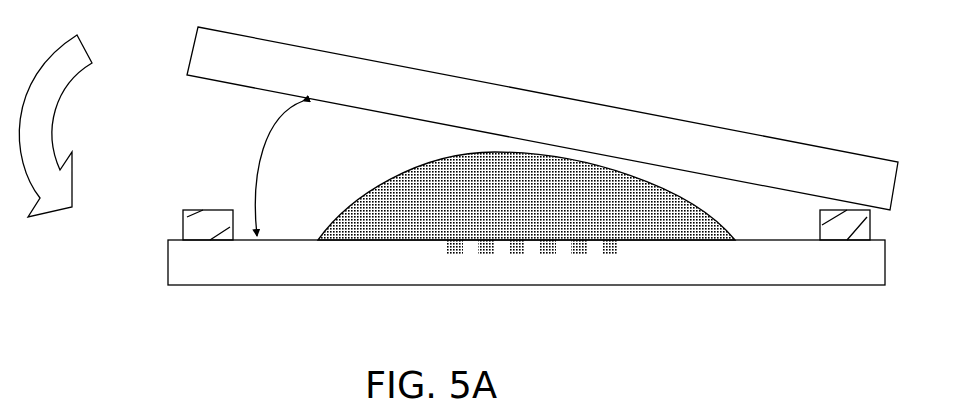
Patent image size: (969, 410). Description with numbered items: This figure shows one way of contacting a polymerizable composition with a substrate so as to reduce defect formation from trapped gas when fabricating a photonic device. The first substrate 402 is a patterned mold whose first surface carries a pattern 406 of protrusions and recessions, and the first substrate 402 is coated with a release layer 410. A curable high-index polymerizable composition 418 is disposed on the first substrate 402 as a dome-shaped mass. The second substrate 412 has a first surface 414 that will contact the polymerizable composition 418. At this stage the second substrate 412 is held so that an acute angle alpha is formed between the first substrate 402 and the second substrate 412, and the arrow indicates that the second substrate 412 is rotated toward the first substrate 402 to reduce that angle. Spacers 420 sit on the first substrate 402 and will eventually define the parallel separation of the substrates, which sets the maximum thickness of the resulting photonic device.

The first substrate 402 is at (182, 283).
The pattern 406 is at (480, 258).
The release layer 410 is at (280, 250).
The second substrate 412 is at (217, 47).
The first surface 414 is at (347, 85).
The polymerizable composition 418 is at (526, 196).
The spacers 420 is at (185, 212).